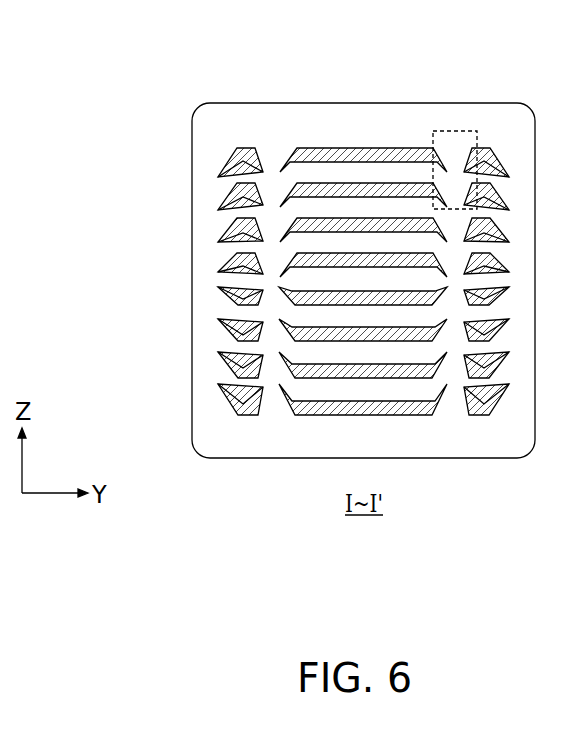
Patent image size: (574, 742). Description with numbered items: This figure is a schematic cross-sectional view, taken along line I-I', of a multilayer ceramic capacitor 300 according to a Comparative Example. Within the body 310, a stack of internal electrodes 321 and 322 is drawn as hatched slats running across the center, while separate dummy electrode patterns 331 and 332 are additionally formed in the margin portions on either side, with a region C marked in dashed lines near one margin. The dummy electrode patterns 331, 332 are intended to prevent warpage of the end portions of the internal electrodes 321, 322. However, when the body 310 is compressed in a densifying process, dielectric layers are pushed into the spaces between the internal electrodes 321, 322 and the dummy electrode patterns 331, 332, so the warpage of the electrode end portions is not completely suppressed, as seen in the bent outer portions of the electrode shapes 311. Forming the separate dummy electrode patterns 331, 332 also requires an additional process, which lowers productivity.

The multilayer ceramic capacitor 300 is at (268, 33).
The body 310 is at (378, 88).
The louver blade 311 is at (222, 182).
The internal electrode 321 is at (315, 147).
The internal electrode 322 is at (319, 194).
The dummy electrode pattern 331 is at (237, 148).
The dummy electrode pattern 332 is at (235, 196).
The region C is at (464, 131).